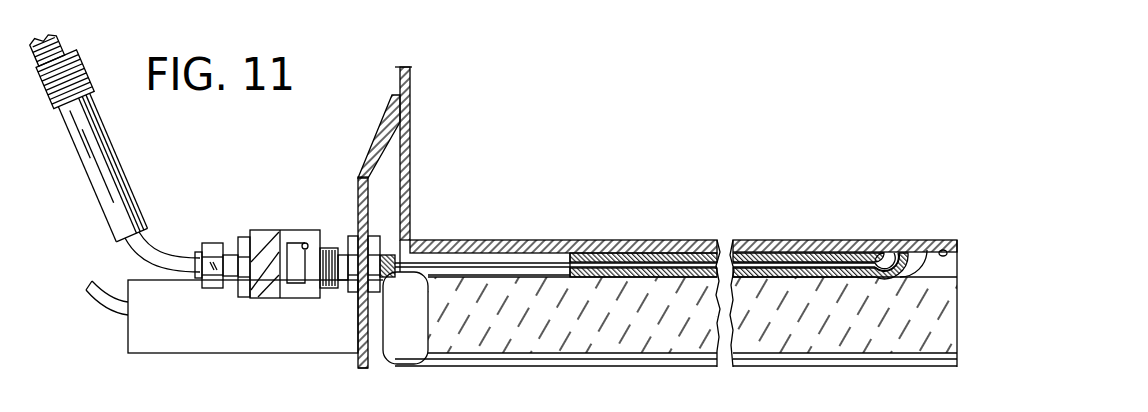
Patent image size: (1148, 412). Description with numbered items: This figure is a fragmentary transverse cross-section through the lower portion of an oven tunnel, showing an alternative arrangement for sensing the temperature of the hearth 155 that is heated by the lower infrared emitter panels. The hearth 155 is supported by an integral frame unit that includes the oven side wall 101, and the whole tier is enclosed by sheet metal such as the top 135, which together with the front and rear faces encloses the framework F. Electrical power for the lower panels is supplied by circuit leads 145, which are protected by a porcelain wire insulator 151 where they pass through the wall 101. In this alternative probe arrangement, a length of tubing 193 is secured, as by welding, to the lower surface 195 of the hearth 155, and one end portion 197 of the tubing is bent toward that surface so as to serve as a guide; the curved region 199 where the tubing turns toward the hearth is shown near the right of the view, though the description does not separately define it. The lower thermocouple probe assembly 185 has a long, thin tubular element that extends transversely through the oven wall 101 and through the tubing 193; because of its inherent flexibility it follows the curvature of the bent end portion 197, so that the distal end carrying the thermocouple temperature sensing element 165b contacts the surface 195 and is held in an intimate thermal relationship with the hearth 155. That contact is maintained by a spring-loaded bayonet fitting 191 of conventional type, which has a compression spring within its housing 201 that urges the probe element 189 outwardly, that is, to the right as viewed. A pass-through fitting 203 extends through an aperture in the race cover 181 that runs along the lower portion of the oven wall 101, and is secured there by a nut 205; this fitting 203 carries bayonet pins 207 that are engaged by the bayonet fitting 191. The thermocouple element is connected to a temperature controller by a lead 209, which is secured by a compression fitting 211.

The side wall 101 is at (410, 162).
The top 135 is at (817, 240).
The circuit leads 145 is at (97, 322).
The porcelain wire insulator 151 is at (258, 355).
The hearth 155 is at (601, 240).
The thermocouple temperature sensing element 165b is at (893, 240).
The race cover 181 is at (357, 205).
The lower thermocouple probe assembly 185 is at (491, 265).
The probe element 189 is at (561, 256).
The spring-loaded bayonet fitting 191 is at (290, 230).
The tubing 193 is at (657, 253).
The lower surface 195 is at (950, 242).
The tubing end portion 197 is at (933, 242).
The tube bend 199 is at (887, 258).
The housing 201 is at (265, 299).
The pass-through fitting 203 is at (393, 232).
The nut 205 is at (338, 240).
The bayonet pins 207 is at (305, 244).
The lead 209 is at (148, 245).
The compression fitting 211 is at (211, 243).
The framework F is at (370, 363).